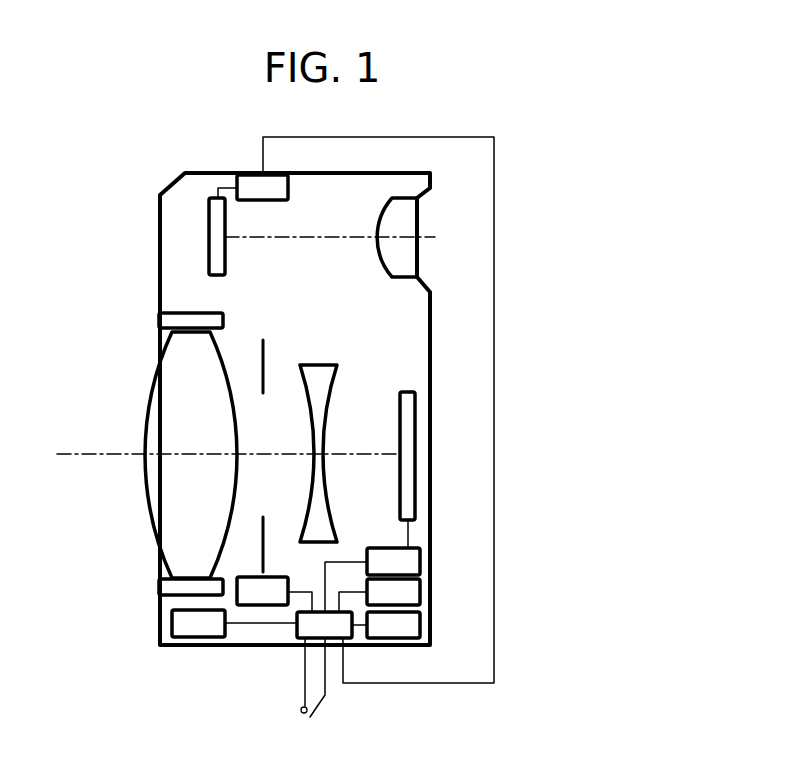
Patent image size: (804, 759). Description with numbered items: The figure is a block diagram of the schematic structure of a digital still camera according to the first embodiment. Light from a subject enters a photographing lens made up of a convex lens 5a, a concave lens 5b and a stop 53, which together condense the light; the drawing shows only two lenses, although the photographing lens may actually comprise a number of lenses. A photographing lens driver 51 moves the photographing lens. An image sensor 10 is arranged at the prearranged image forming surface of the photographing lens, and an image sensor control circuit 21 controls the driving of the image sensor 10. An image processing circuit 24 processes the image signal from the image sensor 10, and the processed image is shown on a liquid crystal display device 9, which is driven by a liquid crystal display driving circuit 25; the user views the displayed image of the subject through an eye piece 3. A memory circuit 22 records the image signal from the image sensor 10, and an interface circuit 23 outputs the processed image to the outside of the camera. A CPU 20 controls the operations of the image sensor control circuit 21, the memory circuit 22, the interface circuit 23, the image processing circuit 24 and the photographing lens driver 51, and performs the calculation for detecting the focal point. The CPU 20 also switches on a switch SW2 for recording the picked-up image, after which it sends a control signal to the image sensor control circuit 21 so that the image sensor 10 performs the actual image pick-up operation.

The eye piece 3 is at (418, 225).
The liquid crystal display device 9 is at (209, 235).
The liquid crystal display driving circuit 25 is at (262, 187).
The convex lens 5a is at (150, 385).
The concave lens 5b is at (327, 364).
The stop 53 is at (263, 340).
The image sensor 10 is at (418, 447).
The image processing circuit 24 is at (274, 594).
The photographing lens driver 51 is at (234, 623).
The CPU 20 is at (332, 625).
The image sensor control circuit 21 is at (372, 580).
The memory circuit 22 is at (379, 595).
The interface circuit 23 is at (393, 625).
The switch SW2 is at (286, 682).